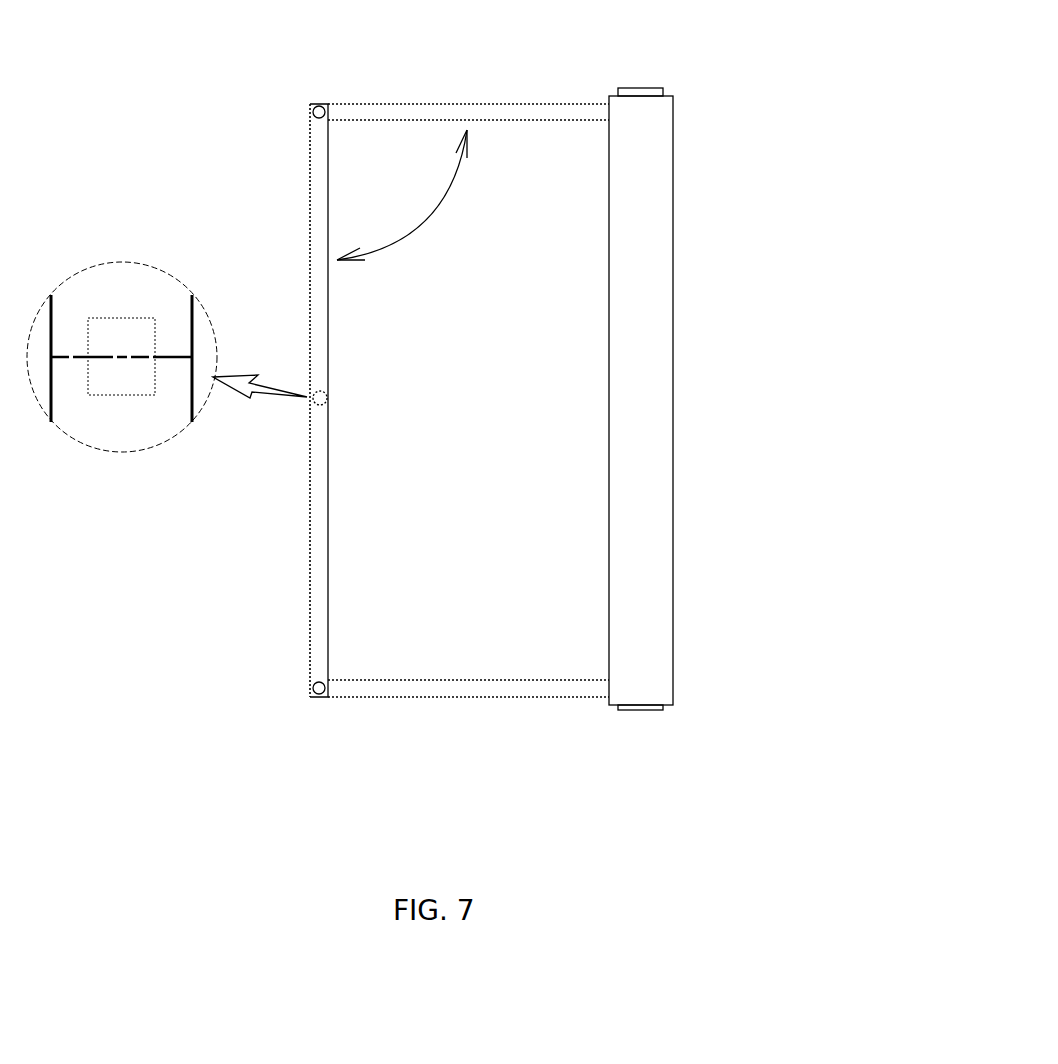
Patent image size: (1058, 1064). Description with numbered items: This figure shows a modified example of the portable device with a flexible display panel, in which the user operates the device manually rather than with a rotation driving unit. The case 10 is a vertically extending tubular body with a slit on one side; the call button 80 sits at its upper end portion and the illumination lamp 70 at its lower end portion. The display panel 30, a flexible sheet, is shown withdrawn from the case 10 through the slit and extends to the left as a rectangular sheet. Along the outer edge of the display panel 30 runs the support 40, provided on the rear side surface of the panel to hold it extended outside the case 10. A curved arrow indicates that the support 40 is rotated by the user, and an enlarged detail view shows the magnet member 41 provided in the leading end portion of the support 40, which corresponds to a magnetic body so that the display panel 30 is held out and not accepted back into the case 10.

The case 10 is at (673, 257).
The display panel 30 is at (487, 642).
The support 40 is at (318, 178).
The magnet member 41 is at (124, 318).
The illumination lamp 70 is at (640, 710).
The call button 80 is at (640, 88).